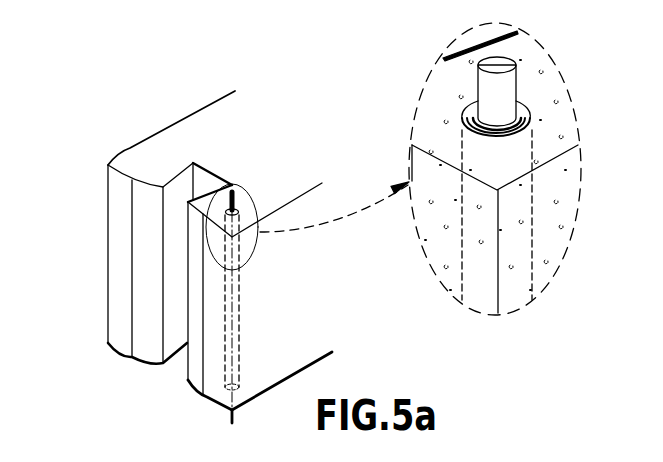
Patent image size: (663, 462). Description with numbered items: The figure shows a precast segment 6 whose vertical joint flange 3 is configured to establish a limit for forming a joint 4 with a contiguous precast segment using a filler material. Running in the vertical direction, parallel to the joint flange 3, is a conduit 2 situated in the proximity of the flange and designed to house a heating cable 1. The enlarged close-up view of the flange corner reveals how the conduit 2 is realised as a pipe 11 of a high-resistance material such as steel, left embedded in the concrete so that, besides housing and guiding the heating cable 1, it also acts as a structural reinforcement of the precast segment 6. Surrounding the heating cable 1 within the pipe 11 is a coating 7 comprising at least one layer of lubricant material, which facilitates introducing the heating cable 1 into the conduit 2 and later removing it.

The heating cable 1 is at (236, 196).
The conduit 2 is at (227, 340).
The joint flange 3 is at (122, 205).
The joint 4 is at (175, 270).
The precast segment 6 is at (215, 127).
The coating of lubricant material 7 is at (470, 110).
The pipe 11 is at (467, 124).